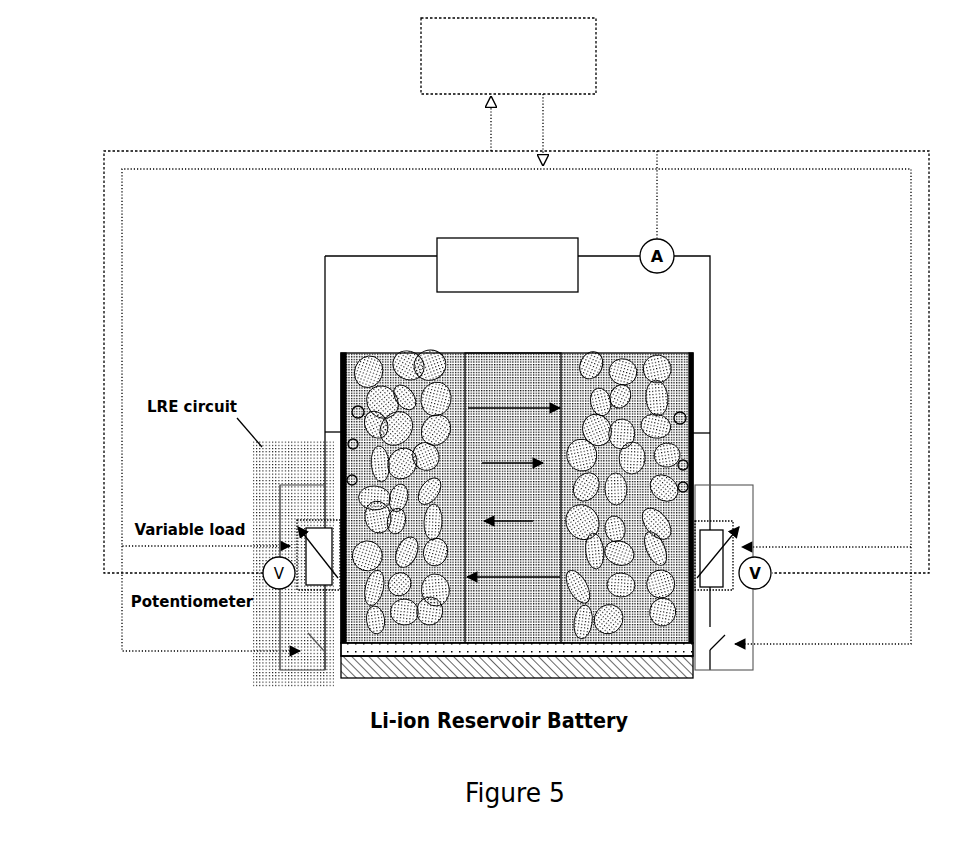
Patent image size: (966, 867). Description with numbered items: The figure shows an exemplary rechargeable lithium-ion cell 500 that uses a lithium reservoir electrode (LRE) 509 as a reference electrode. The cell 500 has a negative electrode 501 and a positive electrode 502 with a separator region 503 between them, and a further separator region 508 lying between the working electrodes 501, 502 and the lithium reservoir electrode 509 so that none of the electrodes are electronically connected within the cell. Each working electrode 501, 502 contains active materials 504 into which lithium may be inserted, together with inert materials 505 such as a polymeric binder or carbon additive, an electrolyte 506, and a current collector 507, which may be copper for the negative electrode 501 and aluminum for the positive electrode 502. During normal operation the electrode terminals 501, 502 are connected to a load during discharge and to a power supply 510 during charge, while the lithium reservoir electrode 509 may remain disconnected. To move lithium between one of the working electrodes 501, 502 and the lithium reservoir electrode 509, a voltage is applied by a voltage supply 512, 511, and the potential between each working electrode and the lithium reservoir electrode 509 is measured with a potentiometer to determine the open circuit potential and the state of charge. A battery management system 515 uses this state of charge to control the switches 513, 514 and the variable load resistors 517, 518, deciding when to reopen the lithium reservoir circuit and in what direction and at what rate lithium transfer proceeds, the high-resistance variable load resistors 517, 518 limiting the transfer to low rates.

The rechargeable lithium-ion cell 500 is at (75, 62).
The negative electrode 501 is at (397, 351).
The positive electrode 502 is at (621, 351).
The separator region 503 is at (500, 352).
The active materials 504 is at (345, 372).
The inert materials 505 is at (352, 410).
The electrolyte 506 is at (349, 442).
The current collector 507 is at (348, 478).
The separator region 508 is at (366, 660).
The lithium reservoir electrode 509 is at (667, 672).
The power supply 510 is at (525, 237).
The voltage supply 511 is at (738, 527).
The voltage supply 512 is at (300, 526).
The switch 513 is at (722, 660).
The switch 514 is at (312, 661).
The battery management system 515 is at (597, 56).
The variable load resistor 517 is at (722, 573).
The variable load resistor 518 is at (316, 571).